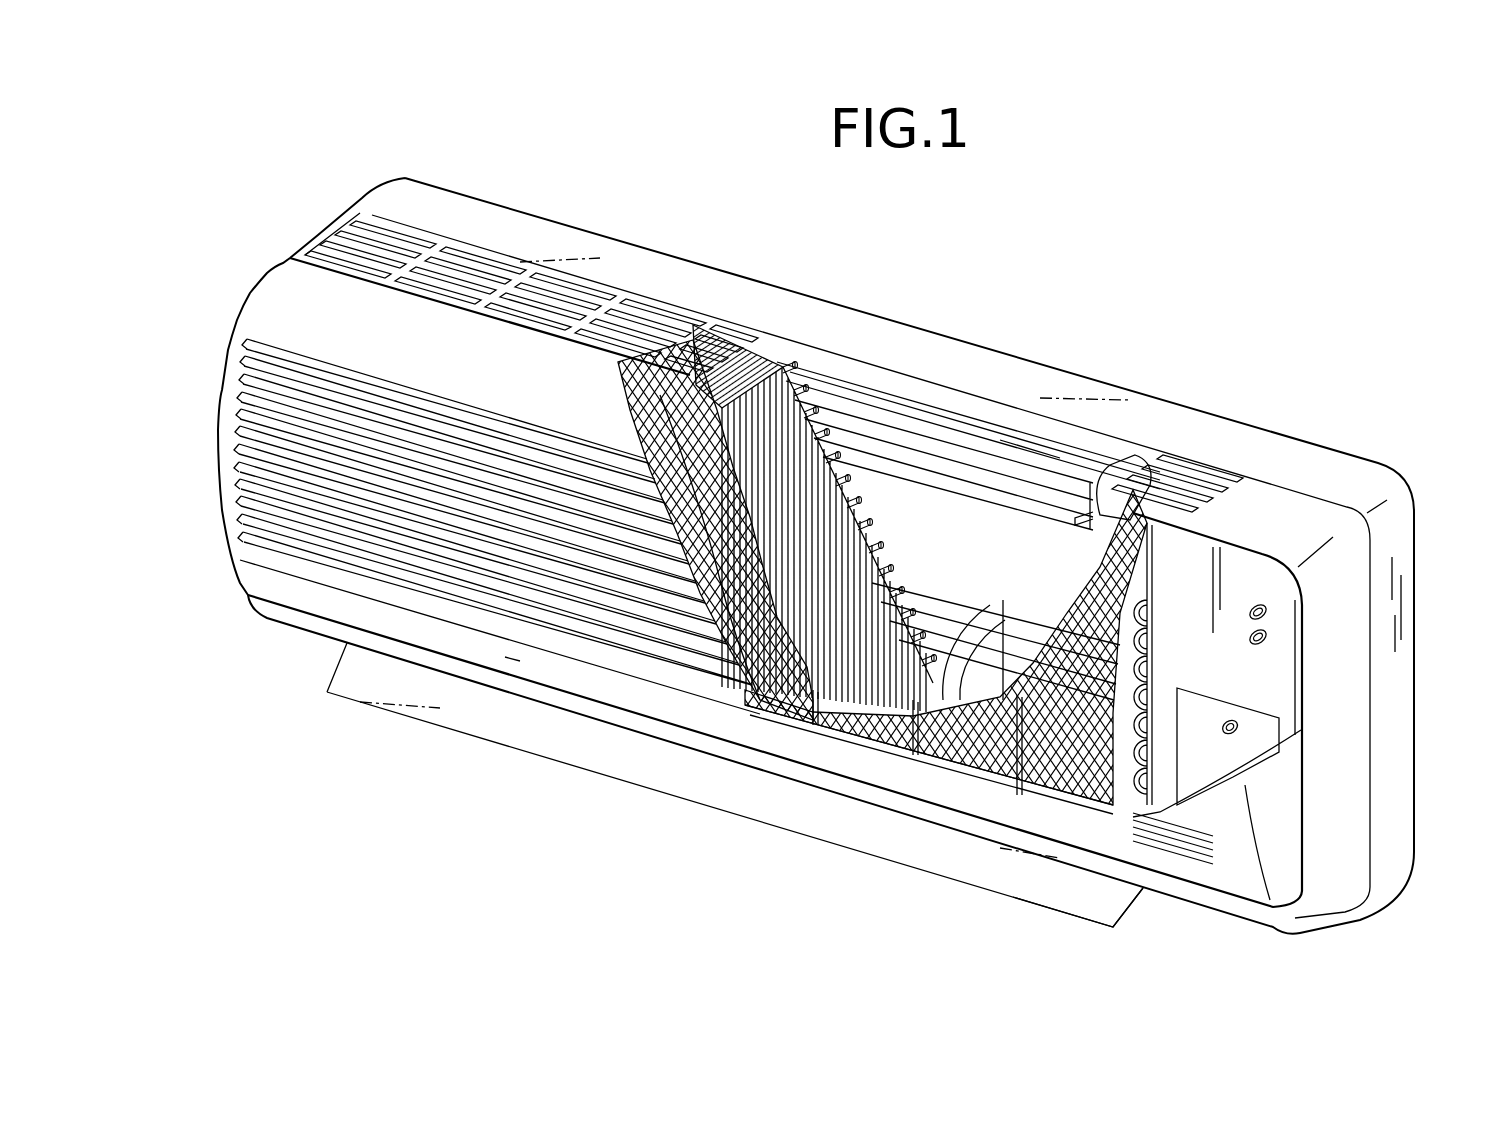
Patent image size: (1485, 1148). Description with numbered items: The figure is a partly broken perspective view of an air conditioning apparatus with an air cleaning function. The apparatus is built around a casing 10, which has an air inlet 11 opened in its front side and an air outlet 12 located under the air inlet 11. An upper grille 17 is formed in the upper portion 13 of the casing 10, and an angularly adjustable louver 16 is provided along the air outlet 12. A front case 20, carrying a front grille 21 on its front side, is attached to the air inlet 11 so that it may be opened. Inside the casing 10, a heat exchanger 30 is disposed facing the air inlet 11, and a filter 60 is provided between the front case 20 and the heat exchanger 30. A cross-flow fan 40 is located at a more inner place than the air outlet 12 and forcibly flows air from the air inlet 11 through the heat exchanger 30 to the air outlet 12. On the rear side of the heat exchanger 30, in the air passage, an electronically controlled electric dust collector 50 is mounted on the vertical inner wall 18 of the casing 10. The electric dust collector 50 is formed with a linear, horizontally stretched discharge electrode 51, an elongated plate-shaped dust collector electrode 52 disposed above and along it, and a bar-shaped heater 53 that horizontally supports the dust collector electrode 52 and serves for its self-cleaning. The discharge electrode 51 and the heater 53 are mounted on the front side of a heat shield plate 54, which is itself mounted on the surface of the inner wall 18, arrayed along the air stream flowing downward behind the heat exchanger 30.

The casing 10 is at (970, 358).
The air inlet 11 is at (825, 718).
The air outlet 12 is at (1018, 848).
The upper portion 13 is at (481, 222).
The louver 16 is at (1120, 903).
The upper grille 17 is at (639, 325).
The inner wall 18 is at (1056, 576).
The front case 20 is at (508, 660).
The front grille 21 is at (591, 635).
The heat exchanger 30 is at (755, 703).
The fan 40 is at (903, 653).
The electric dust collector 50 is at (1000, 463).
The discharge electrode 51 is at (883, 503).
The dust collector electrode 52 is at (948, 441).
The heater 53 is at (1103, 498).
The heat shield plate 54 is at (1018, 458).
The filter 60 is at (976, 771).